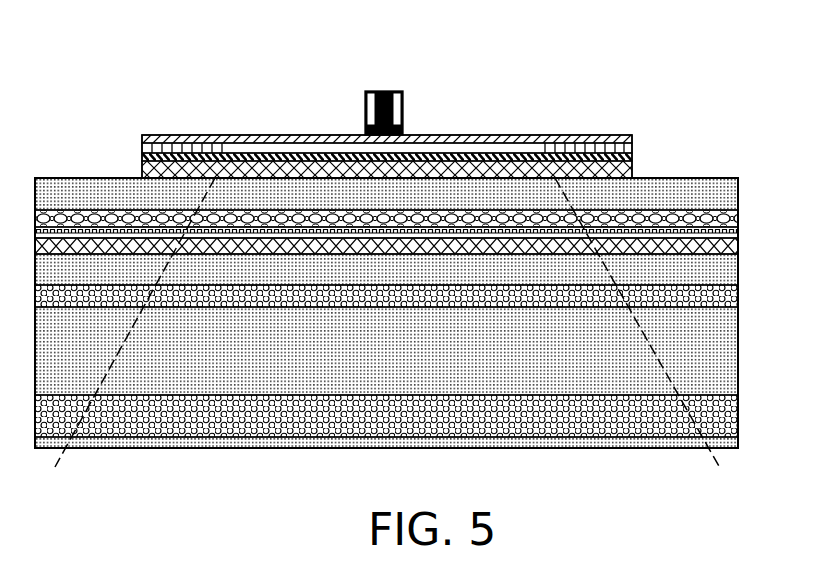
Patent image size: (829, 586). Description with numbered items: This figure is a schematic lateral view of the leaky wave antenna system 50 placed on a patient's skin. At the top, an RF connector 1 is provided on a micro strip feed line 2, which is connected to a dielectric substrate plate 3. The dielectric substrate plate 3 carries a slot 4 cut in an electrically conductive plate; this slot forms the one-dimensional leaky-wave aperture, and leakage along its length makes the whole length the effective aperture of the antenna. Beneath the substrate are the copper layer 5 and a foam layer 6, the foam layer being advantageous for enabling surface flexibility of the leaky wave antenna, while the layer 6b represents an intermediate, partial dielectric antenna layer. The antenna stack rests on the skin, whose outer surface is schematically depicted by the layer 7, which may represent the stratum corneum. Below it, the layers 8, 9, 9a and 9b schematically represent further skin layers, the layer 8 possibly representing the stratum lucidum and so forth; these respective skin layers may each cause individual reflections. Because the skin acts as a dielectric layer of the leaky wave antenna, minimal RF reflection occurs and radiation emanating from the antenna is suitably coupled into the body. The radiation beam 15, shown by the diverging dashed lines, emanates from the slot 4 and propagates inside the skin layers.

The electronic module 50 is at (262, 96).
The RF connector 1 is at (405, 91).
The micro strip feed line 2 is at (406, 124).
The dielectric substrate plate 3 is at (455, 132).
The slot 4 is at (488, 141).
The copper layer 5 is at (600, 143).
The foam layer 6 is at (636, 148).
The intermediate dielectric antenna layer 6b is at (636, 168).
The outer skin surface layer 7 is at (697, 176).
The skin layer 8 is at (742, 208).
The skin layer 9 is at (742, 226).
The heat sink base plate 9a is at (742, 252).
The skin layer 9b is at (748, 448).
The radiation beam 15 is at (660, 346).